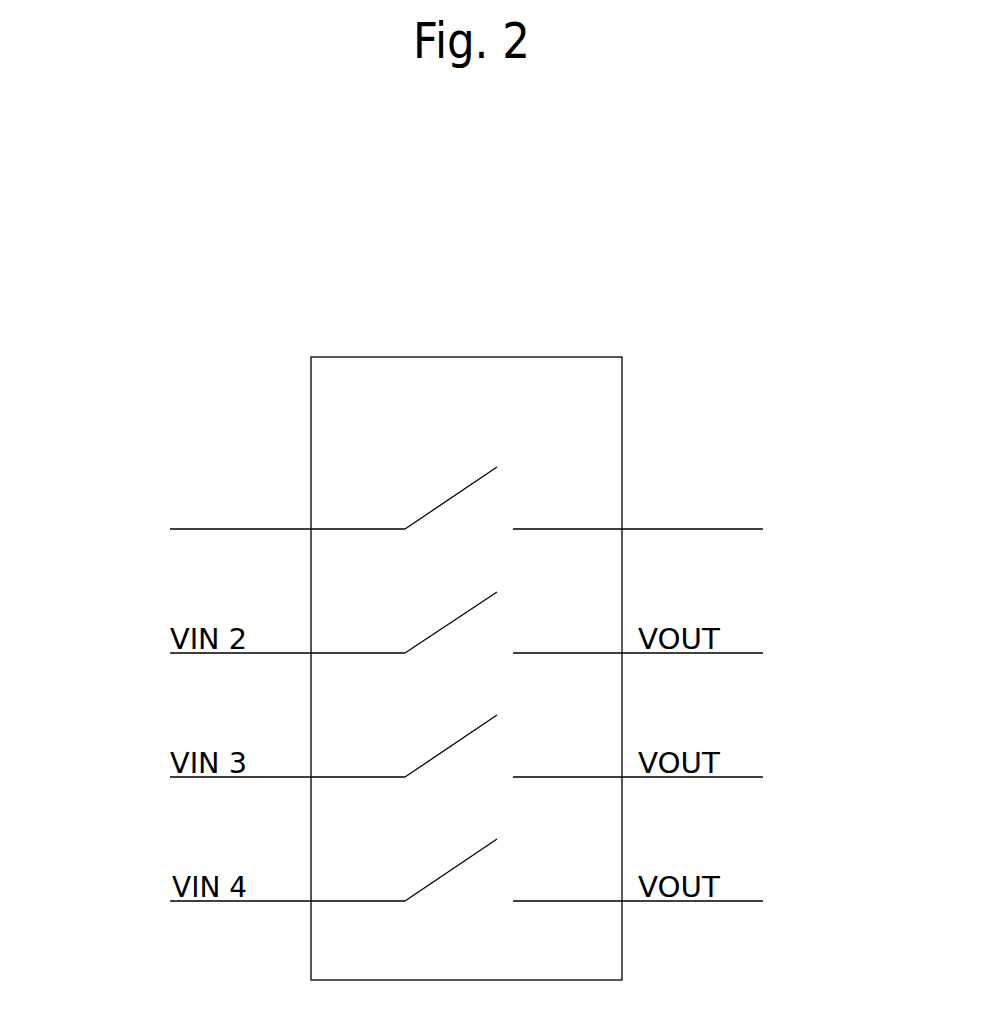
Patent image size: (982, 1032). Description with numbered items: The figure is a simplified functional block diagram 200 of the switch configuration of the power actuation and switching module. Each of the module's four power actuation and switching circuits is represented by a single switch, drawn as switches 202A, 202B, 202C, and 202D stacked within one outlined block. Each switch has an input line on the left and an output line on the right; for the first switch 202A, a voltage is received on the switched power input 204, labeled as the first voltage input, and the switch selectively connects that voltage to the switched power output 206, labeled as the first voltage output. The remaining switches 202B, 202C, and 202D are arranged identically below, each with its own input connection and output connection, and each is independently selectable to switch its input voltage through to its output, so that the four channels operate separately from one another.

The functional block diagram 200 is at (514, 638).
The switch 202A is at (309, 460).
The switch 202B is at (309, 606).
The switch 202C is at (309, 731).
The switch 202D is at (309, 856).
The switched power input 204 is at (217, 497).
The switched power output 206 is at (702, 499).